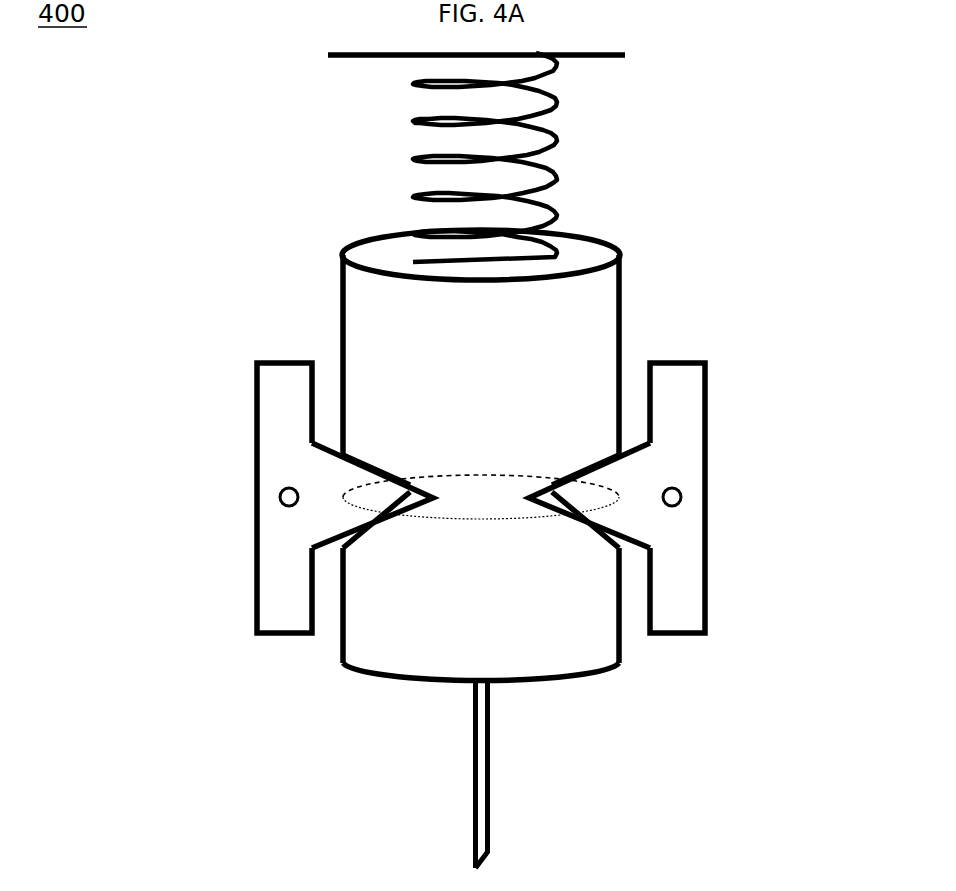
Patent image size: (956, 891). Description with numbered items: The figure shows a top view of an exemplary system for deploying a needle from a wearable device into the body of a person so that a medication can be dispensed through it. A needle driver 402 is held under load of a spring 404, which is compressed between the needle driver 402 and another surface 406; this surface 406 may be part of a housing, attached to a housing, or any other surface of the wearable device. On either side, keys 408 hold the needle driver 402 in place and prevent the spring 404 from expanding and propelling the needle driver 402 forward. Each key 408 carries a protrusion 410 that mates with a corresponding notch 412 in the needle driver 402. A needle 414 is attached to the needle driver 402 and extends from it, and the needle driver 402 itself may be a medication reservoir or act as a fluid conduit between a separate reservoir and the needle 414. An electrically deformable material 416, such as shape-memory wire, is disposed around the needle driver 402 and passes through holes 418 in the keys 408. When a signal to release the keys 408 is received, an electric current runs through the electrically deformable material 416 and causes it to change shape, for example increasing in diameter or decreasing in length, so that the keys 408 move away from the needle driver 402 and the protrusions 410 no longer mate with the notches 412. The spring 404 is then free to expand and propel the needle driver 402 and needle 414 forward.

The needle driver 402 is at (560, 675).
The spring 404 is at (548, 103).
The surface 406 is at (625, 55).
The key 408 is at (257, 450).
The protrusion 410 is at (320, 520).
The notch 412 is at (365, 457).
The needle 414 is at (488, 792).
The electrically deformable material 416 is at (463, 520).
The hole 418 is at (280, 497).